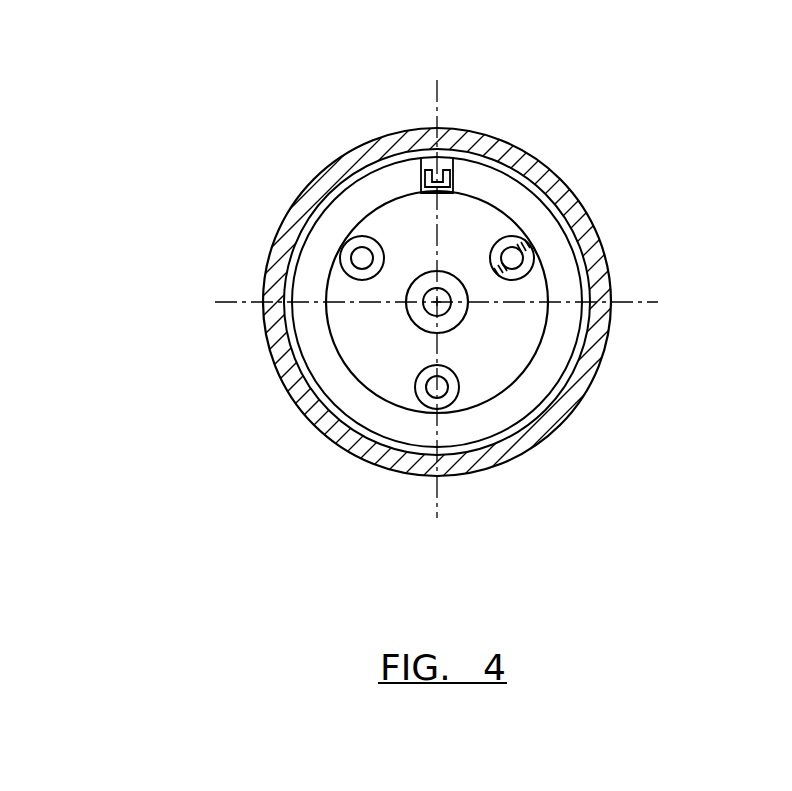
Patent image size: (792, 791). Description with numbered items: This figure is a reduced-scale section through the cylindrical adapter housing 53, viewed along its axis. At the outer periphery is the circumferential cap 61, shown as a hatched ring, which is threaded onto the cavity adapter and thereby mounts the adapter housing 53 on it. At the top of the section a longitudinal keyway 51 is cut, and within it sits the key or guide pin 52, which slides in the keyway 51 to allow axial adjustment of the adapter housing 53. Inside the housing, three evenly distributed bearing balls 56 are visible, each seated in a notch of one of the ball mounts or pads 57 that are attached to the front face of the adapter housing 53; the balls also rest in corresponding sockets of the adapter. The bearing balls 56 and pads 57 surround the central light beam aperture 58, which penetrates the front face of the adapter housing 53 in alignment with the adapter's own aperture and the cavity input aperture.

The longitudinal keyway 51 is at (428, 165).
The key or guide pin 52 is at (453, 182).
The adapter housing 53 is at (363, 205).
The bearing balls 56 is at (358, 257).
The ball mounts or pads 57 is at (347, 265).
The light beam aperture 58 is at (417, 312).
The circumferential cap 61 is at (468, 458).